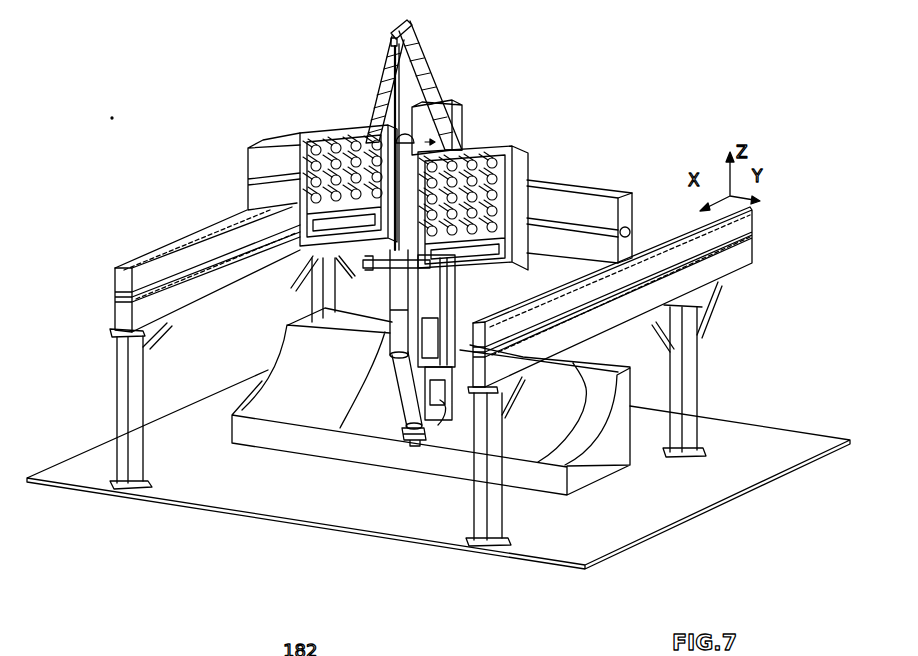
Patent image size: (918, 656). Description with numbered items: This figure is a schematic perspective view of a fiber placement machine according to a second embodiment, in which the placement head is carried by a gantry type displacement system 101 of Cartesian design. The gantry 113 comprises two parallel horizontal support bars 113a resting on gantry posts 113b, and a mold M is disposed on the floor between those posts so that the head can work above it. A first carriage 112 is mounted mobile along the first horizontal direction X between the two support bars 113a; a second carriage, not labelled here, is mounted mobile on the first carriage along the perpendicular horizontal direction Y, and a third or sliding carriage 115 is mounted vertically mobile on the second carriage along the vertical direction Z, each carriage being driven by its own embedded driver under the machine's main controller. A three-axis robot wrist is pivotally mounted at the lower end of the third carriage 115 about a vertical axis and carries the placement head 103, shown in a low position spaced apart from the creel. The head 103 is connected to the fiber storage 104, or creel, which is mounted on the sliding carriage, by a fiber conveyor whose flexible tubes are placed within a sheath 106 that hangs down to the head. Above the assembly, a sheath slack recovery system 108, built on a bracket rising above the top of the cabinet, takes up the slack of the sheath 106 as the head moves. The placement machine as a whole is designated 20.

The additive manufacturing apparatus 20 is at (124, 262).
The gantry type displacement system 101 is at (193, 230).
The placement head 103 is at (405, 443).
The fiber storage 104 is at (525, 155).
The sheath 106 is at (393, 340).
The sheath slack recovery system 108 is at (428, 40).
The first carriage 112 is at (603, 192).
The gantry 113 is at (697, 389).
The support bar 113a is at (752, 258).
The gantry post 113b is at (697, 352).
The third carriage 115 is at (462, 110).
The mold M is at (276, 352).